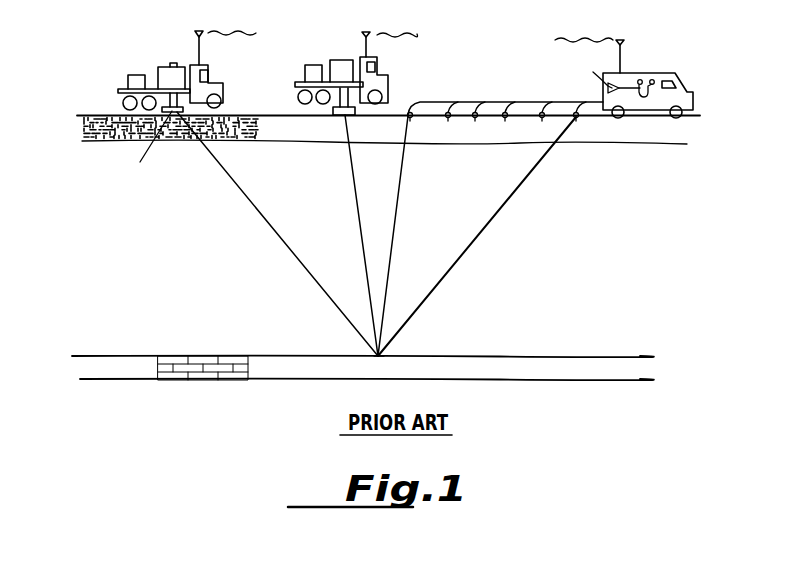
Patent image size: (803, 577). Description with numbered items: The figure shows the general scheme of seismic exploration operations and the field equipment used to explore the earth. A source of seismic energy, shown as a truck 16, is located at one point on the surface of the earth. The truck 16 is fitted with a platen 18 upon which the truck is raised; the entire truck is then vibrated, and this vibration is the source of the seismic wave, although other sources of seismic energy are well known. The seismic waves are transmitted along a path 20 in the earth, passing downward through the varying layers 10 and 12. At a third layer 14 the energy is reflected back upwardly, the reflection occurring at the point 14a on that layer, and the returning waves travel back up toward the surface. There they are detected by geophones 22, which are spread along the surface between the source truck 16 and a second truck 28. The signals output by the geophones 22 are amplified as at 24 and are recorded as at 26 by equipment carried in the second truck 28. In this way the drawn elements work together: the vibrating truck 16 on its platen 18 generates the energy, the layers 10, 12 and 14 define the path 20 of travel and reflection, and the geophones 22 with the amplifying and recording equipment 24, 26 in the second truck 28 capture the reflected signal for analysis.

The layer 10 is at (74, 141).
The layer 12 is at (82, 269).
The third layer 14 is at (72, 379).
The reflection point 14a is at (379, 356).
The truck 16 is at (120, 85).
The platen 18 is at (147, 152).
The path 20 is at (267, 225).
The geophones 22 is at (540, 118).
The amplifier 24 is at (593, 72).
The recorder 26 is at (646, 80).
The second truck 28 is at (688, 90).